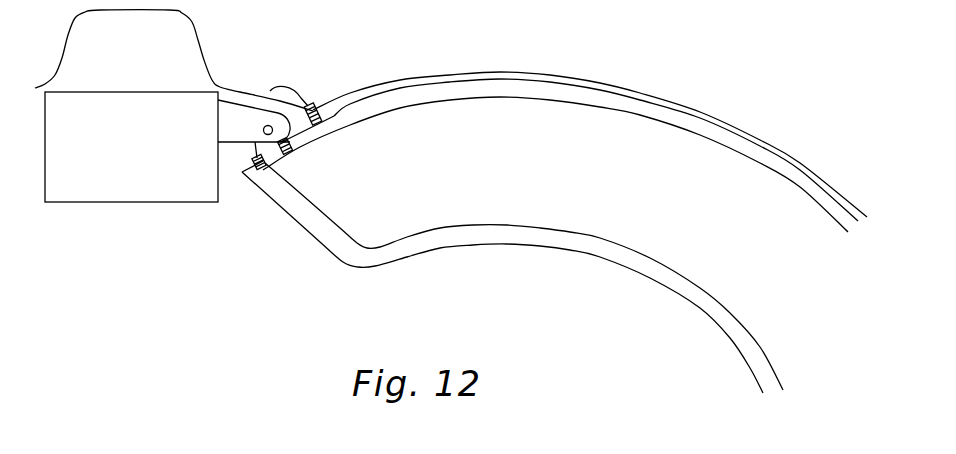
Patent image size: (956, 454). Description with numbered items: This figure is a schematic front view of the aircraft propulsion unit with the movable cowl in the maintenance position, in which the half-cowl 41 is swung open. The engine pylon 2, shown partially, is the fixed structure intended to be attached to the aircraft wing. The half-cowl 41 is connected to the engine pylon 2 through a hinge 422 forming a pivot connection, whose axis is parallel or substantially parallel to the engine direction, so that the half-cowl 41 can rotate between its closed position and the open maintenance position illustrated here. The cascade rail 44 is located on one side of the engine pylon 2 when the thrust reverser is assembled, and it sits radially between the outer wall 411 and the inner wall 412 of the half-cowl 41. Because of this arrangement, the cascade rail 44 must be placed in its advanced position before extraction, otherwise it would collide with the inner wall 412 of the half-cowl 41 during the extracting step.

The engine pylon 2 is at (107, 180).
The half-cowl 41 is at (554, 196).
The outer wall 411 is at (347, 93).
The inner wall 412 is at (320, 137).
The hinge 422 is at (237, 132).
The cascade rail 44 is at (285, 90).